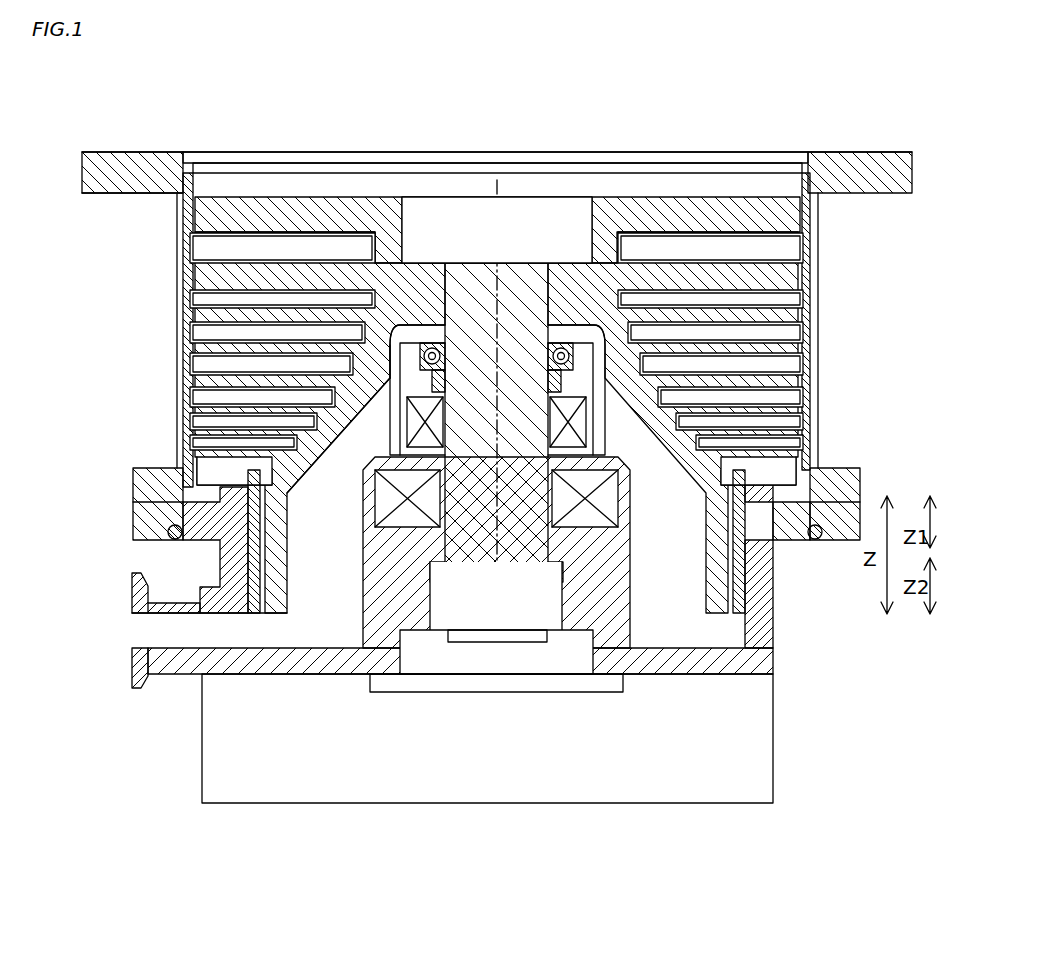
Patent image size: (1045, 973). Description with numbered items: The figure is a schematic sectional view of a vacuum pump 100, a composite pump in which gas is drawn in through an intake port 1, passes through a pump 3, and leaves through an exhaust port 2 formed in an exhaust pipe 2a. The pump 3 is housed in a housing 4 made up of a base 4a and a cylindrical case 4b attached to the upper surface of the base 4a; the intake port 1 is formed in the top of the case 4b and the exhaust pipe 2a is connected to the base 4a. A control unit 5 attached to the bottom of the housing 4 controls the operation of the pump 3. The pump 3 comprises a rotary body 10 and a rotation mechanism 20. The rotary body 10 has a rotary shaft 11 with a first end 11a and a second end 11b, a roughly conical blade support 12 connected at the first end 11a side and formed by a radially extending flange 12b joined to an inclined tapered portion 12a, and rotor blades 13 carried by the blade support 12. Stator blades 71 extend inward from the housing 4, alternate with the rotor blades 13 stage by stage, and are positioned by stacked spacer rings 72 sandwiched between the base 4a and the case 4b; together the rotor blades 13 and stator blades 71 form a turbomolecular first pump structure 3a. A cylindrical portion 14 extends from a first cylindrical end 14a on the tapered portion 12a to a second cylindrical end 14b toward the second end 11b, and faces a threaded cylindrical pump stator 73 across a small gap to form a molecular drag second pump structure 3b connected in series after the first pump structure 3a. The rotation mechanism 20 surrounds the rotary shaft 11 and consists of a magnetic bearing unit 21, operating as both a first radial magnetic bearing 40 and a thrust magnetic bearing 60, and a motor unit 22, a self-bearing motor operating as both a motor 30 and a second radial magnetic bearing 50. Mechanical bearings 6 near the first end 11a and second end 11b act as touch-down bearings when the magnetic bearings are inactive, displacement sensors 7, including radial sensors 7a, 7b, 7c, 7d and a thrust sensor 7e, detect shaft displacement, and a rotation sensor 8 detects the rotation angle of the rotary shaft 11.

The vacuum pump 100 is at (124, 120).
The intake port 1 is at (806, 200).
The exhaust port 2 is at (132, 630).
The exhaust pipe 2a is at (141, 612).
The pump 3 is at (530, 351).
The first pump structure 3a is at (822, 470).
The second pump structure 3b is at (783, 470).
The housing 4 is at (79, 148).
The base 4a is at (140, 532).
The case 4b is at (100, 191).
The control unit 5 is at (202, 738).
The mechanical bearings 6 is at (562, 338).
The displacement sensors 7 is at (470, 487).
The displacement sensor 7a is at (432, 356).
The displacement sensor 7b is at (560, 356).
The displacement sensor 7c is at (465, 602).
The displacement sensor 7d is at (527, 602).
The displacement sensor 7e is at (498, 633).
The rotation sensor 8 is at (531, 607).
The rotary body 10 is at (686, 194).
The rotary shaft 11 is at (336, 531).
The first end 11a is at (497, 230).
The second end 11b is at (477, 628).
The blade support 12 is at (483, 263).
The tapered portion 12a is at (361, 400).
The flange 12b is at (400, 320).
The rotor blades 13 is at (271, 275).
The cylindrical portion 14 is at (718, 540).
The first cylindrical end 14a is at (288, 494).
The second cylindrical end 14b is at (262, 615).
The rotation mechanism 20 is at (484, 688).
The magnetic bearing unit 21 is at (680, 420).
The motor unit 22 is at (591, 661).
The motor 30 is at (407, 498).
The first radial magnetic bearing 40 is at (425, 422).
The second radial magnetic bearing 50 is at (632, 503).
The thrust magnetic bearing 60 is at (590, 417).
The stator blades 71 is at (196, 248).
The spacer ring 72 is at (196, 212).
The pump stator 73 is at (252, 540).